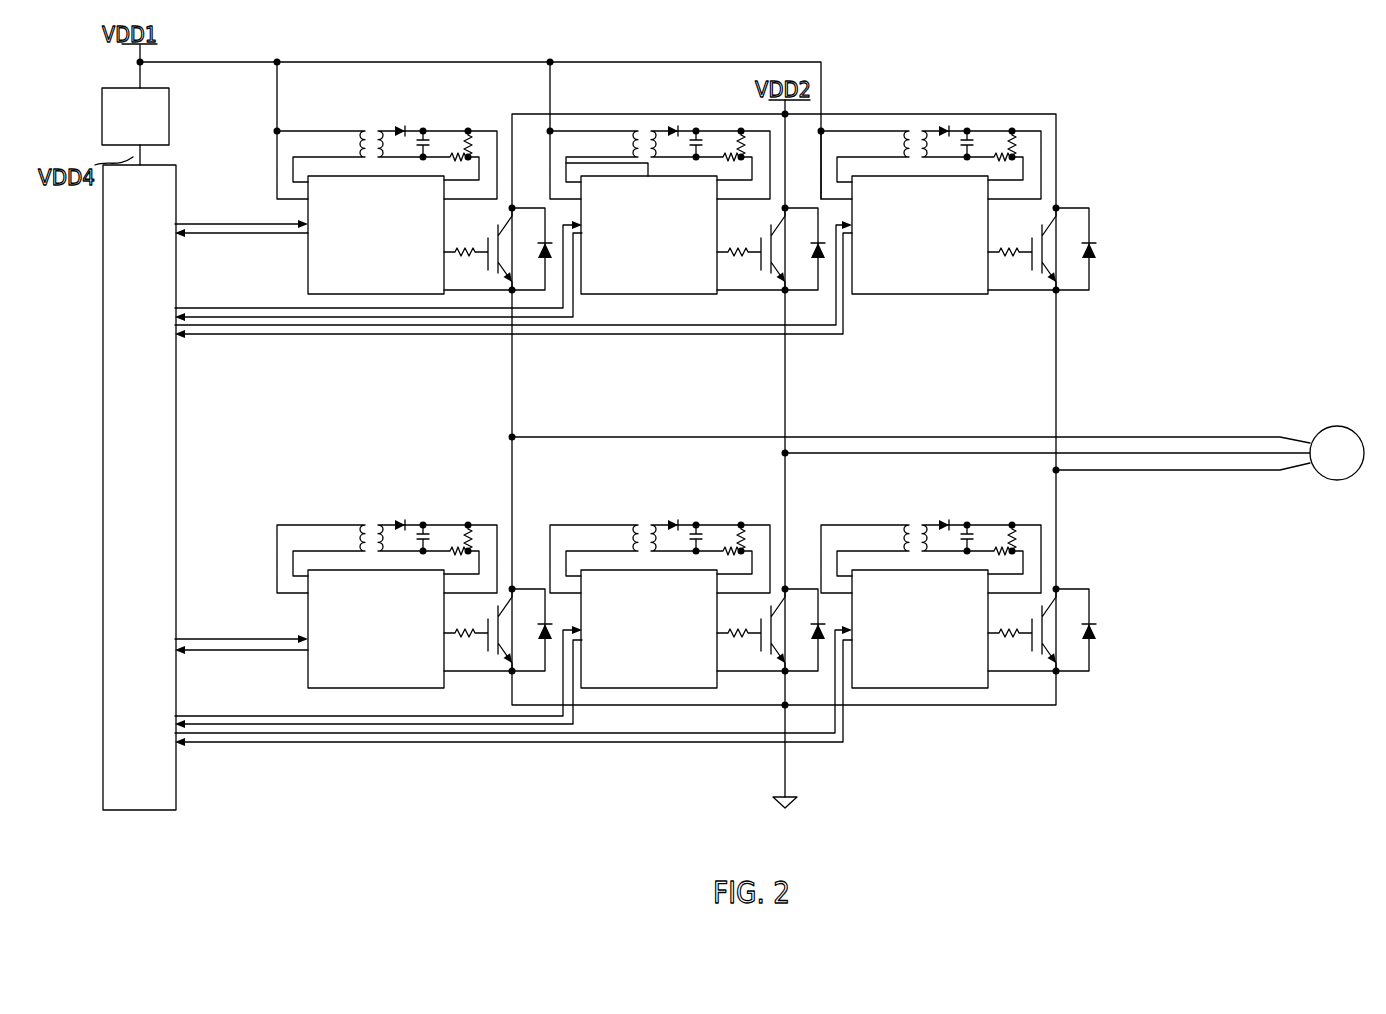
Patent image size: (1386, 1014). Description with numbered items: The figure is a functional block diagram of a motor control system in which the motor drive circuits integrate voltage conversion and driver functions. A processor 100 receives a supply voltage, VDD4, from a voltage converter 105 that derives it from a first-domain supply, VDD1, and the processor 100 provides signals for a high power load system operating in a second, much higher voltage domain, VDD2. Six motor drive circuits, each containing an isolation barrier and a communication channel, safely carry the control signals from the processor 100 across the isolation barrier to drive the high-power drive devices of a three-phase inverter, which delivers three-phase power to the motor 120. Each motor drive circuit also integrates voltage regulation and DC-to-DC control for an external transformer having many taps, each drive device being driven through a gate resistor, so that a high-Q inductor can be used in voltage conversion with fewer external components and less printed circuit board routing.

The processor 100 is at (159, 499).
The voltage converter 105 is at (153, 130).
The motor 120 is at (1336, 426).